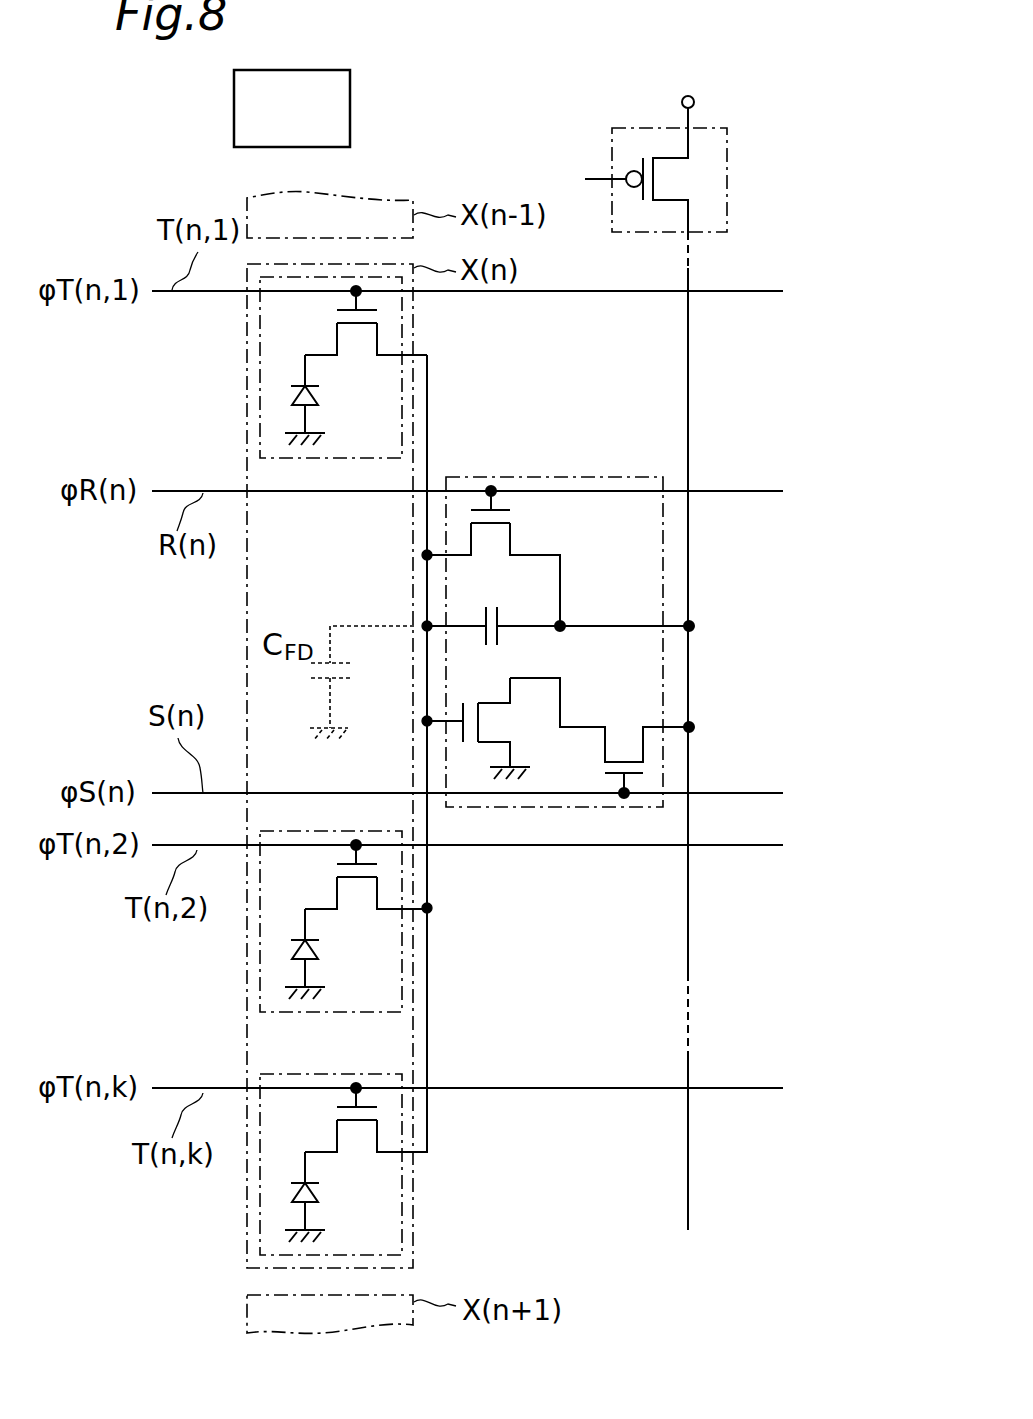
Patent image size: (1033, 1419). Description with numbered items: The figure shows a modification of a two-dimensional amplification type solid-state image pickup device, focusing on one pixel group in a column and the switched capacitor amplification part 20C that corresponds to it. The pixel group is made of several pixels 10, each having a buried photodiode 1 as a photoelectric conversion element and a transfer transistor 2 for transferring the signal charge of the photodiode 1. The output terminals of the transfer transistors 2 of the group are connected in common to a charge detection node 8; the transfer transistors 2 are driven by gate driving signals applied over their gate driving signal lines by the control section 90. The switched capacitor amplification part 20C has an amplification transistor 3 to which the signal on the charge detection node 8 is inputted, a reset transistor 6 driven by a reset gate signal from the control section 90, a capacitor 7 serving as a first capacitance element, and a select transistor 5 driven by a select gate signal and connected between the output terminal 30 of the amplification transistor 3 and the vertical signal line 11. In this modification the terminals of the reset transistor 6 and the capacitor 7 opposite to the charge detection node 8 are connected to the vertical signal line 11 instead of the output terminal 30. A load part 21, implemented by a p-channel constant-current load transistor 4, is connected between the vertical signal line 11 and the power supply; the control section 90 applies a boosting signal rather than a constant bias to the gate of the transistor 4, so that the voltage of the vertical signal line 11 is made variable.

The control section 90 is at (352, 102).
The load part 21 is at (670, 147).
The constant-current load transistor 4 is at (657, 181).
The vertical signal line 11 is at (692, 578).
The charge detection node 8 is at (430, 826).
The pixel 10 is at (260, 425).
The transfer transistor 2 is at (355, 325).
The buried photodiode 1 is at (312, 398).
The switched capacitor amplification part 20C is at (580, 476).
The reset transistor 6 is at (490, 527).
The capacitor 7 is at (503, 614).
The amplification transistor 3 is at (480, 720).
The output terminal 30 is at (565, 678).
The select transistor 5 is at (628, 760).